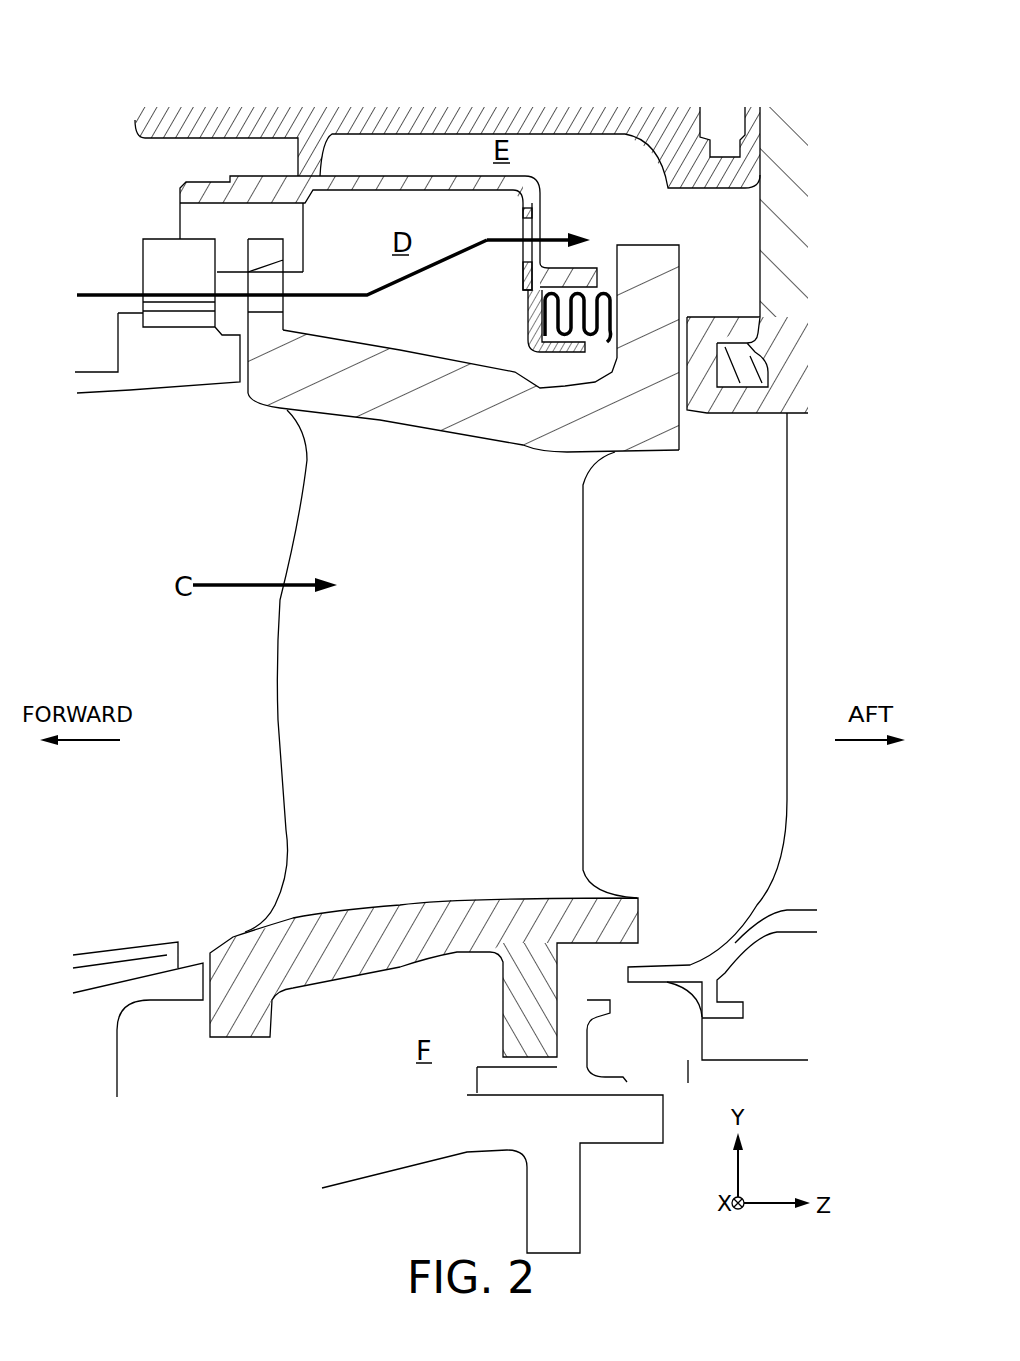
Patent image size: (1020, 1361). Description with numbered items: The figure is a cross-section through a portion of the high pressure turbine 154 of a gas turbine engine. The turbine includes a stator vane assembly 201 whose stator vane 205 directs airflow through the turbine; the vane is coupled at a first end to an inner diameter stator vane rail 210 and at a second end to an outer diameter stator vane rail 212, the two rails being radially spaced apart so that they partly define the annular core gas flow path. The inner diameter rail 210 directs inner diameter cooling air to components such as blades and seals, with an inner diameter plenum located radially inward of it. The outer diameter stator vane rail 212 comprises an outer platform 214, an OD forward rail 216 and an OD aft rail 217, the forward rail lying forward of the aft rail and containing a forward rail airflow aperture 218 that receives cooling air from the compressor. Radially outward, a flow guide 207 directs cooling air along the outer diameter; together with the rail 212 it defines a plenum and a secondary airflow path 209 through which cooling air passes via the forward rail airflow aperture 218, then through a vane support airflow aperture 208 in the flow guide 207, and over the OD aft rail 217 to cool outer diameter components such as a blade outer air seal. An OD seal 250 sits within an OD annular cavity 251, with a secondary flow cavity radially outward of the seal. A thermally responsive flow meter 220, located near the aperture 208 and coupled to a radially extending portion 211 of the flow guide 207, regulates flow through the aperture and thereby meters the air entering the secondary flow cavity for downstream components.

The high pressure turbine 154 is at (125, 70).
The stator vane assembly 201 is at (385, 671).
The stator vane 205 is at (416, 651).
The flow guide 207 is at (413, 178).
The vane support airflow aperture 208 is at (552, 222).
The secondary airflow path 209 is at (86, 294).
The inner diameter stator vane rail 210 is at (231, 916).
The radially extending portion 211 is at (532, 308).
The outer diameter stator vane rail 212 is at (260, 428).
The outer platform 214 is at (496, 371).
The OD forward rail 216 is at (263, 317).
The OD aft rail 217 is at (680, 253).
The forward rail airflow aperture 218 is at (282, 303).
The thermally responsive flow meter 220 is at (525, 213).
The OD seal 250 is at (530, 297).
The OD annular cavity 251 is at (573, 308).